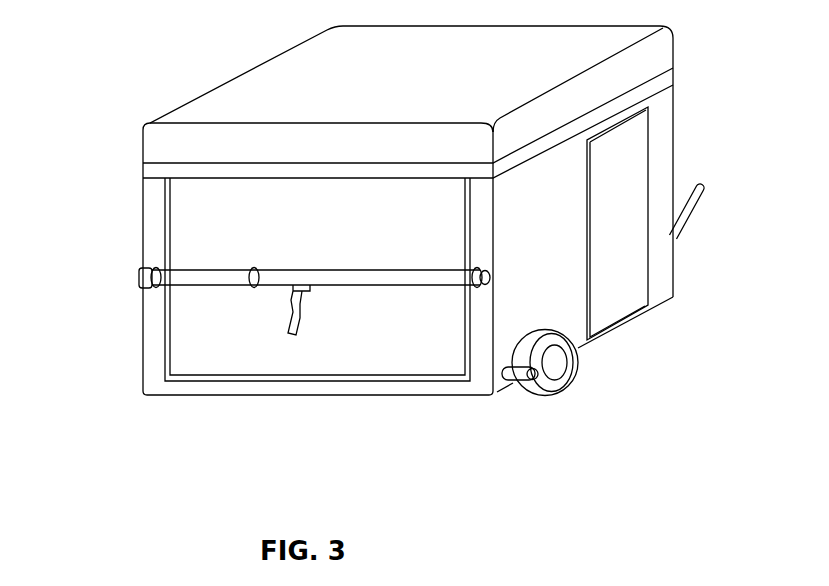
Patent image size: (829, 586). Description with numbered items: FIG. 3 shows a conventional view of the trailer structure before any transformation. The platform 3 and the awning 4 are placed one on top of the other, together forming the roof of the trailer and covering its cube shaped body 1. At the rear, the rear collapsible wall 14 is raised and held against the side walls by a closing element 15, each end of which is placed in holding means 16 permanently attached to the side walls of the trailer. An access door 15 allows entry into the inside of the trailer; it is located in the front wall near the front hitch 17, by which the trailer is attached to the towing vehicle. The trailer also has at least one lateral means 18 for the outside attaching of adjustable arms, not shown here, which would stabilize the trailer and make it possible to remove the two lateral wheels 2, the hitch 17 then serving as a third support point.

The cube shaped body 1 is at (550, 180).
The lateral wheels 2 is at (567, 360).
The platform 3 is at (152, 172).
The awning 4 is at (203, 106).
The rear collapsible wall 14 is at (245, 325).
The closing element 15 is at (628, 247).
The holding means 16 is at (150, 276).
The front hitch 17 is at (697, 200).
The lateral means 18 is at (518, 377).